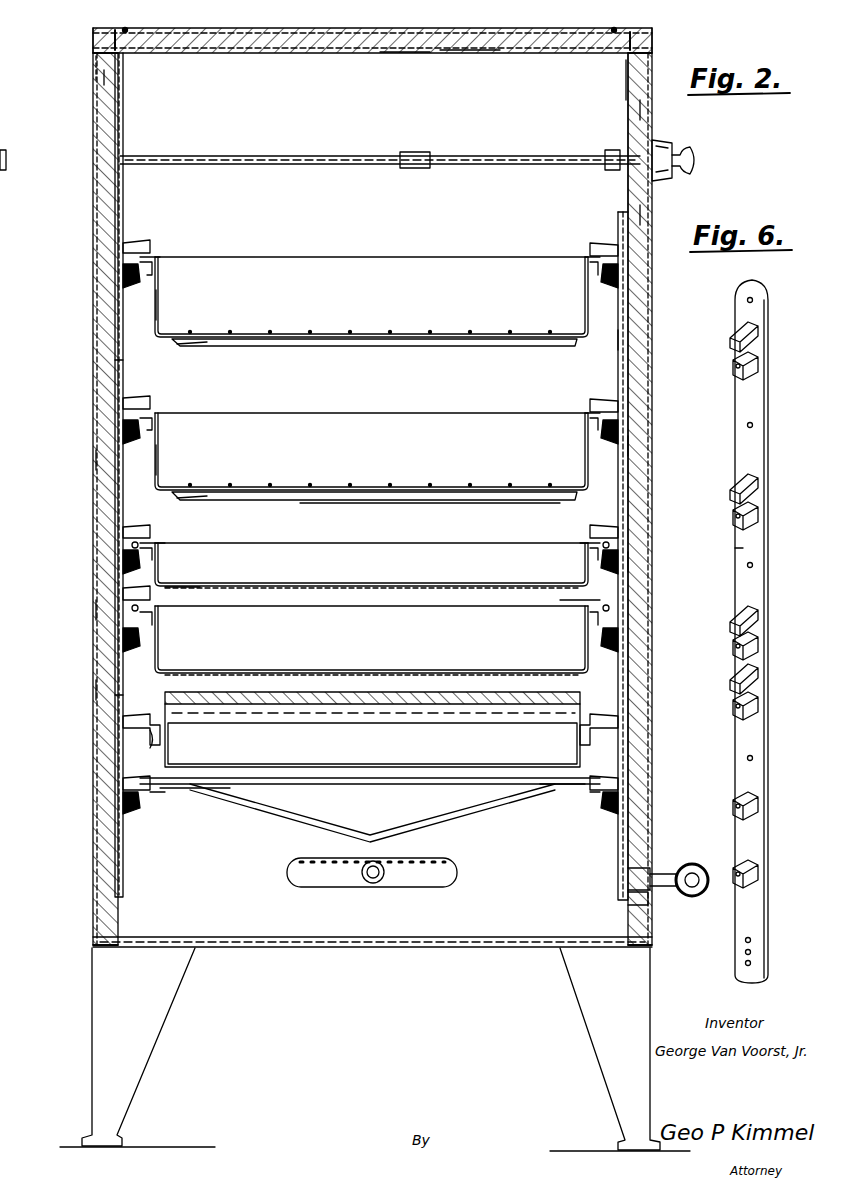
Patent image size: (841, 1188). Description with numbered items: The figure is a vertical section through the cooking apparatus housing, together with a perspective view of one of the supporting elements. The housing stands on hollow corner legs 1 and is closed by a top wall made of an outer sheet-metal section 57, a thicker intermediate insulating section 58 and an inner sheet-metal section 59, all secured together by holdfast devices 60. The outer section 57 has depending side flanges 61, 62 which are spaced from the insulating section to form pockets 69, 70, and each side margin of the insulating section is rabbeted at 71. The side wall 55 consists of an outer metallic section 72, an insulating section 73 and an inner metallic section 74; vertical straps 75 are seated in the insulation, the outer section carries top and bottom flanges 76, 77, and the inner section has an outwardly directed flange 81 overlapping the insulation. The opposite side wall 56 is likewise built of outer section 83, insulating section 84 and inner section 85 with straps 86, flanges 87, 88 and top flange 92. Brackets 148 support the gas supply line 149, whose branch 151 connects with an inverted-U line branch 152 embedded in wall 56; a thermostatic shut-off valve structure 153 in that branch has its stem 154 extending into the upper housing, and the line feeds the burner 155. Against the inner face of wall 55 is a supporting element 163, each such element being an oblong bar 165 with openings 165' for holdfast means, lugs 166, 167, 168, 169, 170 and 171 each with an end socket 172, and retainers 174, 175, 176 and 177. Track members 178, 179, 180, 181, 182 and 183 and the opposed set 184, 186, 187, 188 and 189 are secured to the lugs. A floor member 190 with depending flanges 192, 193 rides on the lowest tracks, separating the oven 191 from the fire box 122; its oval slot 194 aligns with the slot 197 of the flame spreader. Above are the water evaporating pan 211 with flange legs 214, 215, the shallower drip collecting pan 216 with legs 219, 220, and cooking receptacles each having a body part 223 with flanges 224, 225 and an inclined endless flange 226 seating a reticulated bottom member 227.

In FIG. 2, the hollow corner leg 1 is at (580, 990).
In FIG. 2, the side wall 55 is at (88, 320).
In FIG. 2, the side wall 56 is at (658, 323).
In FIG. 2, the outer section of top wall 57 is at (412, 22).
In FIG. 2, the intermediate section of top wall 58 is at (470, 54).
In FIG. 2, the inner section of top wall 59 is at (412, 52).
In FIG. 2, the holdfast device 60 is at (125, 29).
In FIG. 2, the depending flange 61 is at (95, 50).
In FIG. 2, the depending flange 62 is at (654, 50).
In FIG. 2, the pocket 69 is at (93, 40).
In FIG. 2, the pocket 70 is at (656, 33).
In FIG. 2, the rabbet 71 is at (104, 75).
In FIG. 2, the outer metallic section 72 is at (110, 608).
In FIG. 2, the intermediate section 73 is at (110, 685).
In FIG. 2, the inner metallic section 74 is at (115, 702).
In FIG. 2, the metallic strap 75 is at (95, 460).
In FIG. 2, the inwardly extending flange 76 is at (115, 30).
In FIG. 2, the inwardly extending flange 77 is at (100, 945).
In FIG. 2, the outwardly directed flange 81 is at (98, 58).
In FIG. 2, the outer metallic section 83 is at (628, 562).
In FIG. 2, the intermediate section 84 is at (740, 97).
In FIG. 2, the inner metallic section 85 is at (618, 340).
In FIG. 2, the metallic strap 86 is at (628, 446).
In FIG. 2, the inwardly extending flange 87 is at (630, 32).
In FIG. 2, the inwardly extending flange 88 is at (652, 960).
In FIG. 2, the outwardly directed flange 92 is at (628, 75).
In FIG. 2, the fire box 122 is at (565, 790).
In FIG. 2, the supporting bracket 148 is at (660, 895).
In FIG. 2, the gas supply line 149 is at (692, 864).
In FIG. 2, the branch 151 is at (660, 870).
In FIG. 2, the upstanding line branch 152 is at (640, 214).
In FIG. 2, the thermostatically controlled shut-off valve structure 153 is at (664, 140).
In FIG. 2, the barrel or stem 154 is at (458, 155).
In FIG. 2, the burner 155 is at (365, 880).
In FIG. 2, the supporting element 163 is at (123, 378).
In FIG. 6, the oblong bar 165 is at (771, 621).
In FIG. 6, the opening 165' is at (776, 612).
In FIG. 2, the lug 166 is at (125, 798).
In FIG. 6, the lug 166 is at (756, 876).
In FIG. 2, the lug 167 is at (135, 738).
In FIG. 6, the lug 167 is at (756, 806).
In FIG. 2, the lug 168 is at (125, 650).
In FIG. 6, the lug 168 is at (756, 706).
In FIG. 2, the lug 169 is at (125, 568).
In FIG. 6, the lug 169 is at (756, 646).
In FIG. 2, the lug 170 is at (125, 423).
In FIG. 6, the lug 170 is at (752, 518).
In FIG. 2, the lug 171 is at (125, 273).
In FIG. 6, the lug 171 is at (745, 372).
In FIG. 6, the socket 172 is at (720, 542).
In FIG. 2, the retainer 174 is at (152, 406).
In FIG. 6, the retainer 174 is at (735, 681).
In FIG. 2, the retainer 175 is at (140, 520).
In FIG. 6, the retainer 175 is at (735, 628).
In FIG. 2, the retainer 176 is at (140, 403).
In FIG. 6, the retainer 176 is at (738, 484).
In FIG. 2, the retainer 177 is at (140, 240).
In FIG. 6, the retainer 177 is at (735, 338).
In FIG. 2, the track member 178 is at (160, 795).
In FIG. 2, the track member 179 is at (150, 730).
In FIG. 2, the track member 180 is at (160, 630).
In FIG. 2, the track member 181 is at (160, 562).
In FIG. 2, the track member 182 is at (158, 436).
In FIG. 2, the track member 183 is at (158, 278).
In FIG. 2, the track member 184 is at (592, 800).
In FIG. 2, the track member 186 is at (595, 630).
In FIG. 2, the track member 187 is at (595, 563).
In FIG. 2, the track member 188 is at (595, 432).
In FIG. 2, the track member 189 is at (590, 280).
In FIG. 2, the floor member 190 is at (175, 790).
In FIG. 2, the oven 191 is at (425, 505).
In FIG. 2, the depending flange 192 is at (125, 780).
In FIG. 2, the depending flange 193 is at (590, 782).
In FIG. 2, the oval-shaped slot 194 is at (410, 768).
In FIG. 2, the transverse slot 197 is at (290, 820).
In FIG. 2, the water evaporating pan 211 is at (323, 670).
In FIG. 2, the horizontal leg 214 is at (175, 587).
In FIG. 2, the vertical leg 215 is at (128, 632).
In FIG. 2, the drip collecting pan 216 is at (325, 580).
In FIG. 2, the horizontal leg 219 is at (150, 543).
In FIG. 2, the vertical leg 220 is at (128, 540).
In FIG. 2, the body part 223 is at (160, 305).
In FIG. 2, the lateral flange 224 is at (153, 253).
In FIG. 2, the lateral flange 225 is at (588, 257).
In FIG. 2, the inclined endless flange 226 is at (185, 345).
In FIG. 2, the reticulated member 227 is at (300, 335).